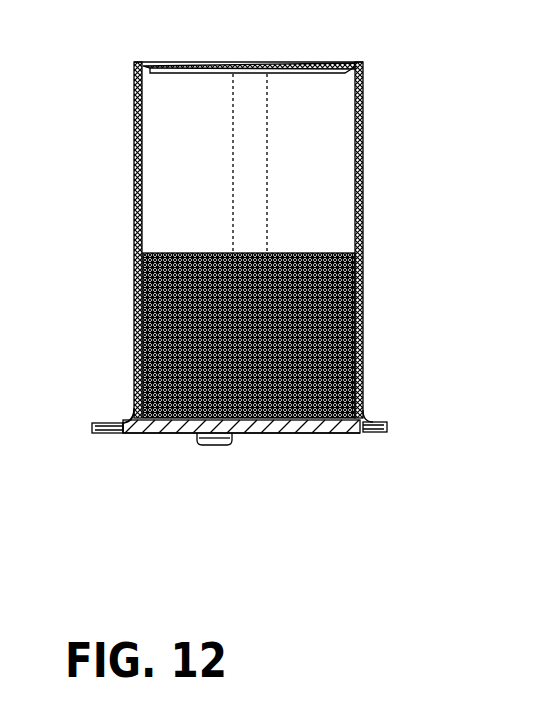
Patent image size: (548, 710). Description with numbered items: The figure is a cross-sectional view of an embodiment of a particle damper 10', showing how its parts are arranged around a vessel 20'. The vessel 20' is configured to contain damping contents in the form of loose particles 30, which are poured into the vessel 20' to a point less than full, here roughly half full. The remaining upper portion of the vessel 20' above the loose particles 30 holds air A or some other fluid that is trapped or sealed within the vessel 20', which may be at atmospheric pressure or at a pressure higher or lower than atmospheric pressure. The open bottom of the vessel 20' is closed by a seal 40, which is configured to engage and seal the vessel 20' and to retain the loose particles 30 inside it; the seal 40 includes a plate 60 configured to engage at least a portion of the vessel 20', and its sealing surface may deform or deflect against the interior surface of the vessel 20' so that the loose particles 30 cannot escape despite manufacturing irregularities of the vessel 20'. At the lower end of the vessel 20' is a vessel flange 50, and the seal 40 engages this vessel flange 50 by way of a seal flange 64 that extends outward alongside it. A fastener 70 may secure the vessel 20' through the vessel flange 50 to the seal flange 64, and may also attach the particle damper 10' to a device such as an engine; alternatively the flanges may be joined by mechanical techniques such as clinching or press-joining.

The particle damper 10' is at (270, 278).
The vessel 20' is at (305, 242).
The air A is at (177, 133).
The loose particles 30 is at (327, 253).
The seal 40 is at (290, 436).
The vessel flange 50 is at (127, 417).
The plate 60 is at (248, 433).
The seal flange 64 is at (122, 438).
The fastener 70 is at (215, 445).